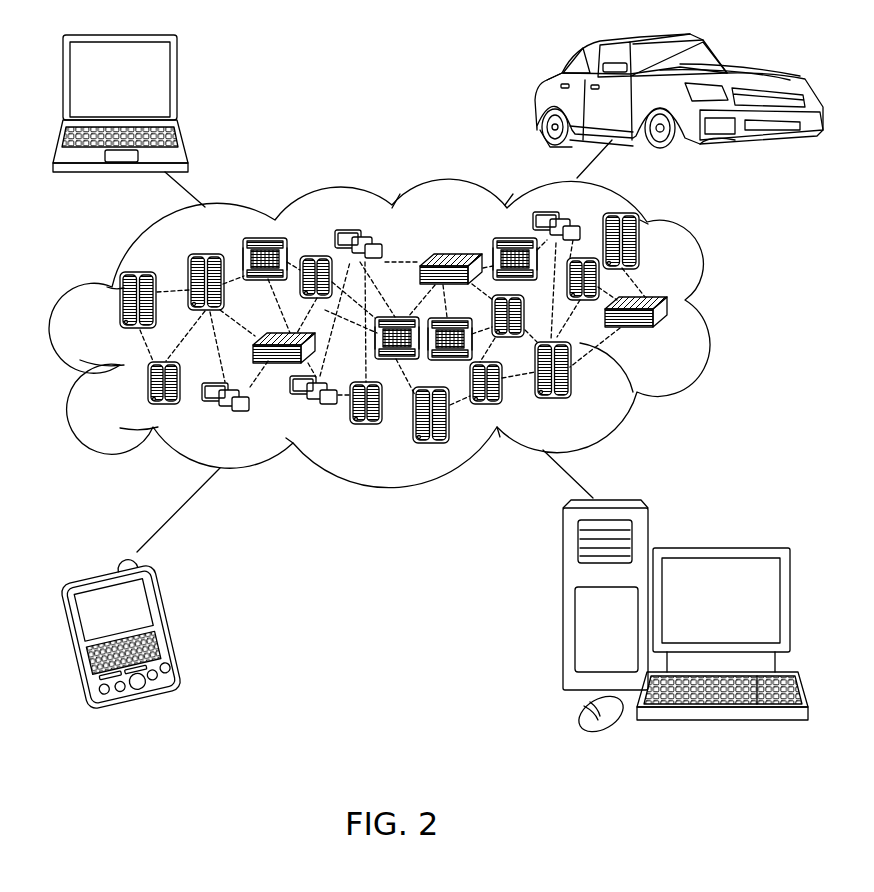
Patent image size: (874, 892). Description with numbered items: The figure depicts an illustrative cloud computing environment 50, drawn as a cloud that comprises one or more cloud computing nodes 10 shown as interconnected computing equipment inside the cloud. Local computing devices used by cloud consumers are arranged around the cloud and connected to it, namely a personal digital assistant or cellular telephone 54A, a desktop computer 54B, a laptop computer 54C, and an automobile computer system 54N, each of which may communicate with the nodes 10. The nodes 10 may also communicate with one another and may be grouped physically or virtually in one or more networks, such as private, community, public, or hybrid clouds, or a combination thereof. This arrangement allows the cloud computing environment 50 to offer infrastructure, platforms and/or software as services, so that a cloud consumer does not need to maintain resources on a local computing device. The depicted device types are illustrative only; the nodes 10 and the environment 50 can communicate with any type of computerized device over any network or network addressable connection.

The cloud computing nodes 10 is at (668, 336).
The cloud computing environment 50 is at (720, 307).
The personal digital assistant (PDA) or cellular telephone 54A is at (168, 628).
The desktop computer 54B is at (718, 548).
The laptop computer 54C is at (177, 88).
The automobile computer system 54N is at (540, 100).